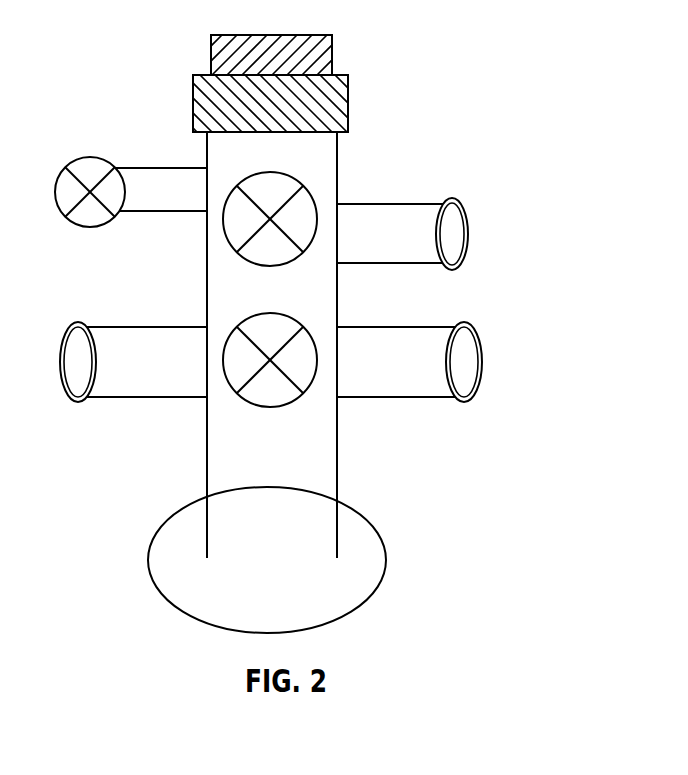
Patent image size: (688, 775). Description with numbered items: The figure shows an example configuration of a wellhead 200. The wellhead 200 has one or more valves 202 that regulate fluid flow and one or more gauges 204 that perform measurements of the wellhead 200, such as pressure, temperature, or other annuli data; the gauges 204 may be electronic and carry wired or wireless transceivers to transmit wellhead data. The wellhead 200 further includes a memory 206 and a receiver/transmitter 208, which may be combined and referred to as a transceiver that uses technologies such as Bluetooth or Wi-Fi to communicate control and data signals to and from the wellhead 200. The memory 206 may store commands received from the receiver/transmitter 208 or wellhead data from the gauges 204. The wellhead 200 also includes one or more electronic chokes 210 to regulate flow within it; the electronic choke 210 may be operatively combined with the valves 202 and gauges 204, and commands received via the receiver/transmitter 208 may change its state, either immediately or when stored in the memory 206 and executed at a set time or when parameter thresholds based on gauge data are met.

The wellhead 200 is at (386, 565).
The valve 202 is at (271, 407).
The gauge 204 is at (468, 237).
The memory 206 is at (348, 108).
The receiver/transmitter 208 is at (332, 55).
The electronic choke 210 is at (85, 157).